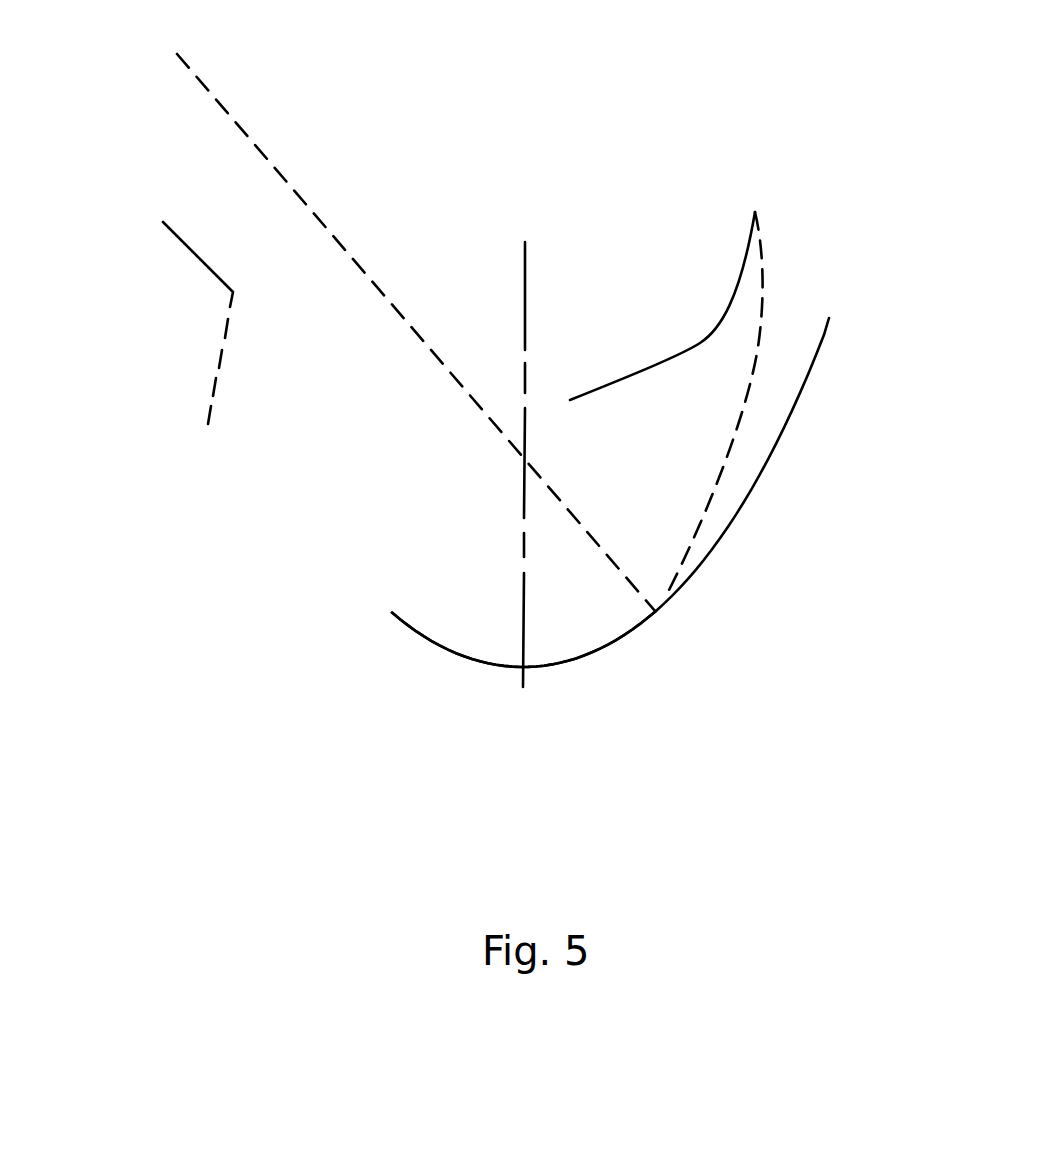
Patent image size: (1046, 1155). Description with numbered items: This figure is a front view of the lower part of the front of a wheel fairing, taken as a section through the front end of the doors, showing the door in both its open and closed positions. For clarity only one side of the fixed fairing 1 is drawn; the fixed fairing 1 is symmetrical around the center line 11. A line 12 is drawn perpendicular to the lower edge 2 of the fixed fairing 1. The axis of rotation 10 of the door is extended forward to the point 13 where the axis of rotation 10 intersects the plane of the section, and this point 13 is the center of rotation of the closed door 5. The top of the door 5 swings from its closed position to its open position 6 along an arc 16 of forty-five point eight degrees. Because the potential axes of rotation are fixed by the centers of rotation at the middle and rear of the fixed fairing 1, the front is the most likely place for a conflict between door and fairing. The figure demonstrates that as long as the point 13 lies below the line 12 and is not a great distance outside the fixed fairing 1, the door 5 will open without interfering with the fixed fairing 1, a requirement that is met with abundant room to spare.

The fixed fairing 1 is at (765, 465).
The lower edge 2 is at (657, 612).
The door 5 is at (585, 652).
The open position 6 is at (703, 343).
The axis of rotation 10 is at (220, 357).
The center line 11 is at (525, 281).
The line 12 is at (277, 170).
The point 13 is at (170, 242).
The arc 16 is at (763, 295).